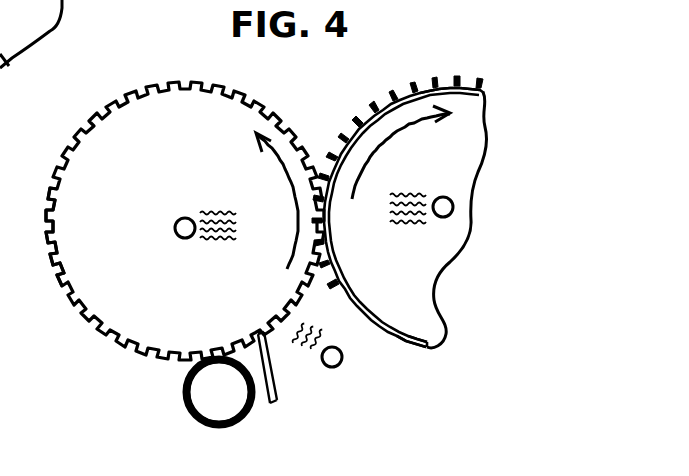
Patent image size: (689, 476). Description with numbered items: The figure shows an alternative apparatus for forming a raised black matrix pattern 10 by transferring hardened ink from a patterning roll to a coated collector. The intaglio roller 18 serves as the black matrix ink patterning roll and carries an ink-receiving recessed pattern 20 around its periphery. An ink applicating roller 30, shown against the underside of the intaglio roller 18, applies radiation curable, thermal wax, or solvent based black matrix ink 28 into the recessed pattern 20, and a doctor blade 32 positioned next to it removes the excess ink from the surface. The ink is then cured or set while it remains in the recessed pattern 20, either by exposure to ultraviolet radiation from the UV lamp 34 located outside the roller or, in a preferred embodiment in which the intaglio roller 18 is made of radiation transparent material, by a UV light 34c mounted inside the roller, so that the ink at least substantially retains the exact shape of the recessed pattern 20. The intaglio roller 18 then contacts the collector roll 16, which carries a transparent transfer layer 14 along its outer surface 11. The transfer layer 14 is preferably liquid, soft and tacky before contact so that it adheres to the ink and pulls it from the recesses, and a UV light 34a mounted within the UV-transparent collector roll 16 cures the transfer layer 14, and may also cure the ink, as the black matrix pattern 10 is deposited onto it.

The black matrix pattern 10 is at (377, 108).
The belt outer surface 11 is at (427, 87).
The transparent transfer layer 14 is at (422, 350).
The collector roll 16 is at (457, 171).
The intaglio roller 18 is at (196, 161).
The recessed pattern 20 is at (47, 236).
The black matrix ink 28 is at (184, 398).
The ink applicating roller 30 is at (236, 407).
The doctor blade 32 is at (276, 402).
The UV lamp 34 is at (341, 366).
The UV light 34a is at (441, 218).
The UV light 34c is at (180, 238).